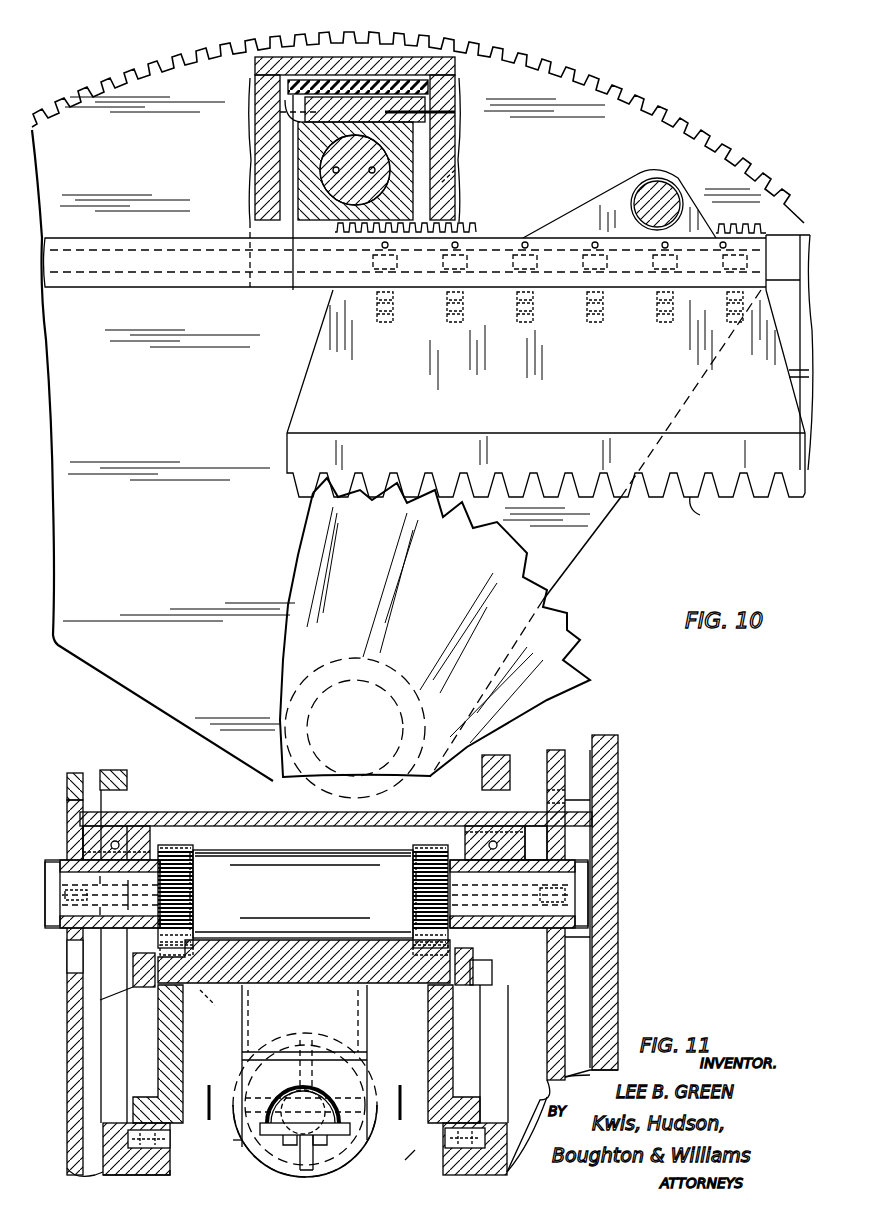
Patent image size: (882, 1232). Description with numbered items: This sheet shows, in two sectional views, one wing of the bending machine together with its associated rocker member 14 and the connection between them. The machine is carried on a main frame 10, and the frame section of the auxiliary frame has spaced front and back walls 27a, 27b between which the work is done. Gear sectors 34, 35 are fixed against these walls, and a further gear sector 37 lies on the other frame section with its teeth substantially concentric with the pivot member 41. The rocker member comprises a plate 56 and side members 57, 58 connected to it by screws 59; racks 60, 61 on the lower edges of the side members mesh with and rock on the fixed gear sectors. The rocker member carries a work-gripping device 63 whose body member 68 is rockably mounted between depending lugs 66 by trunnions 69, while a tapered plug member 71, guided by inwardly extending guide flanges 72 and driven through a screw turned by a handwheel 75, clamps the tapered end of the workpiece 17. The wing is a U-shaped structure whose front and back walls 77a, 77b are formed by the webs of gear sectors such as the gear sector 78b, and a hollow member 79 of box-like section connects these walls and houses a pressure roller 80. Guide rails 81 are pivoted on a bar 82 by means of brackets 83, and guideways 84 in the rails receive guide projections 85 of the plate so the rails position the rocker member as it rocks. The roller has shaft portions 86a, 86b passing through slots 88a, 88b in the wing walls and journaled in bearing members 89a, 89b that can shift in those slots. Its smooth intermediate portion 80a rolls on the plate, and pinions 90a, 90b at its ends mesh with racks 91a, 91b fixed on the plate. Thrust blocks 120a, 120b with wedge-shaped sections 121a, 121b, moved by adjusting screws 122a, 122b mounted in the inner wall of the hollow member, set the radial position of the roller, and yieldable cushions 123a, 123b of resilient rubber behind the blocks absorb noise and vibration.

In FIG. 11, the main frame 10 is at (630, 752).
In FIG. 10, the rocker member 14 is at (780, 318).
In FIG. 11, the workpiece 17 is at (283, 1092).
In FIG. 11, the front wall 27a is at (70, 1112).
In FIG. 11, the back wall 27b is at (505, 1120).
In FIG. 11, the front gear sector 34 is at (165, 1162).
In FIG. 11, the back gear sector 35 is at (442, 1160).
In FIG. 10, the gear sector 37 is at (565, 612).
In FIG. 10, the pivot member 41 is at (398, 690).
In FIG. 11, the plate 56 is at (300, 960).
In FIG. 10, the side member 57 is at (330, 318).
In FIG. 11, the side member 57 is at (160, 1052).
In FIG. 11, the side member 58 is at (470, 1040).
In FIG. 10, the screw 59 is at (515, 300).
In FIG. 11, the screw 59 is at (217, 1008).
In FIG. 10, the rack 60 is at (706, 515).
In FIG. 11, the rack 60 is at (172, 1138).
In FIG. 11, the rack 61 is at (398, 1161).
In FIG. 11, the work-gripping device 63 is at (236, 1143).
In FIG. 11, the depending lug 66 is at (388, 1018).
In FIG. 11, the body member 68 is at (358, 1060).
In FIG. 11, the trunnion 69 is at (408, 1095).
In FIG. 11, the tapered plug member 71 is at (284, 1142).
In FIG. 11, the guide flange 72 is at (275, 1160).
In FIG. 11, the handwheel 75 is at (345, 1160).
In FIG. 11, the front wall 77a is at (70, 1035).
In FIG. 10, the back wall 77b is at (62, 538).
In FIG. 11, the back wall 77b is at (600, 1025).
In FIG. 10, the gear sector 78b is at (615, 85).
In FIG. 10, the hollow member 79 is at (412, 60).
In FIG. 11, the hollow member 79 is at (378, 814).
In FIG. 11, the pressure roller 80 is at (325, 856).
In FIG. 11, the intermediate portion 80a is at (275, 856).
In FIG. 10, the guide rail 81 is at (200, 248).
In FIG. 11, the guide rail 81 is at (105, 978).
In FIG. 10, the bar 82 is at (656, 188).
In FIG. 10, the bracket 83 is at (590, 205).
In FIG. 11, the guideway 84 is at (472, 972).
In FIG. 11, the guide projection 85 is at (472, 955).
In FIG. 10, the shaft portion 86a is at (320, 175).
In FIG. 11, the shaft portion 86a is at (140, 900).
In FIG. 11, the shaft portion 86b is at (545, 870).
In FIG. 11, the slot 88a is at (75, 962).
In FIG. 11, the slot 88b is at (556, 962).
In FIG. 10, the bearing member 89a is at (300, 138).
In FIG. 11, the bearing member 89a is at (80, 858).
In FIG. 11, the bearing member 89b is at (548, 932).
In FIG. 10, the pinion 90a is at (458, 172).
In FIG. 11, the pinion 90a is at (175, 848).
In FIG. 11, the pinion 90b is at (430, 848).
In FIG. 10, the rack 91a is at (478, 228).
In FIG. 11, the rack 91a is at (182, 945).
In FIG. 11, the rack 91b is at (418, 945).
In FIG. 11, the thrust block 120a is at (145, 833).
In FIG. 11, the thrust block 120b is at (555, 830).
In FIG. 10, the wedge-shaped section 121a is at (362, 100).
In FIG. 11, the wedge-shaped section 121a is at (85, 840).
In FIG. 11, the wedge-shaped section 121b is at (530, 826).
In FIG. 10, the adjusting screw 122a is at (455, 112).
In FIG. 11, the adjusting screw 122a is at (100, 835).
In FIG. 11, the adjusting screw 122b is at (495, 830).
In FIG. 10, the yieldable cushion 123a is at (275, 58).
In FIG. 11, the yieldable cushion 123a is at (135, 815).
In FIG. 11, the yieldable cushion 123b is at (470, 812).